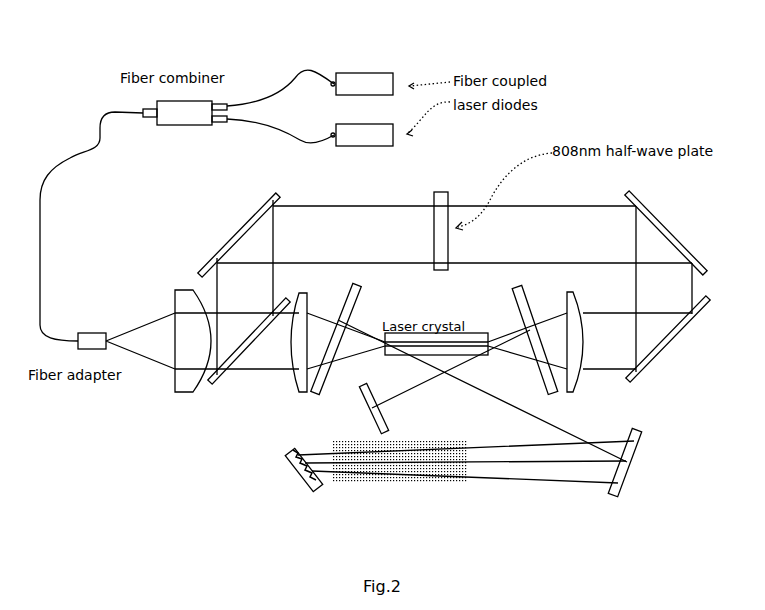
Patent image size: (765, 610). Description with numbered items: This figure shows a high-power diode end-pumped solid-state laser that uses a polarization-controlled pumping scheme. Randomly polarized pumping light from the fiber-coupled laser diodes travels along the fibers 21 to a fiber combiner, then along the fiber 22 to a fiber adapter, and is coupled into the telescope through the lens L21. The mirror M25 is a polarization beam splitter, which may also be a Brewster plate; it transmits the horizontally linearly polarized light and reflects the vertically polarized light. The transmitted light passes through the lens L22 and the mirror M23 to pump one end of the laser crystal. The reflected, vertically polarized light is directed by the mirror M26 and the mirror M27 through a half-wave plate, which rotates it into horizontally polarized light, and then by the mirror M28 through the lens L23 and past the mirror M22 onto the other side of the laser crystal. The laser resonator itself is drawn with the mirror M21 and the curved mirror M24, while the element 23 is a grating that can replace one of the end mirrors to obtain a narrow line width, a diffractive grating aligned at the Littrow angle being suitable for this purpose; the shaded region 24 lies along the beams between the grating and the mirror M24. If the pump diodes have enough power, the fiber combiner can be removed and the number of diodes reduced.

The optical fibers of laser diodes 21 is at (289, 118).
The optical fiber from fiber combiner 22 is at (46, 201).
The diffraction grating 23 is at (276, 470).
The output beam region 24 is at (364, 489).
The mirror M21 is at (392, 408).
The mirror M22 is at (526, 333).
The mirror M23 is at (353, 338).
The curved mirror M24 is at (639, 462).
The mirror M25 is at (272, 342).
The mirror M26 is at (239, 235).
The mirror M27 is at (666, 233).
The mirror M28 is at (668, 339).
The lens L21 is at (182, 329).
The lens L22 is at (301, 333).
The lens L23 is at (578, 334).